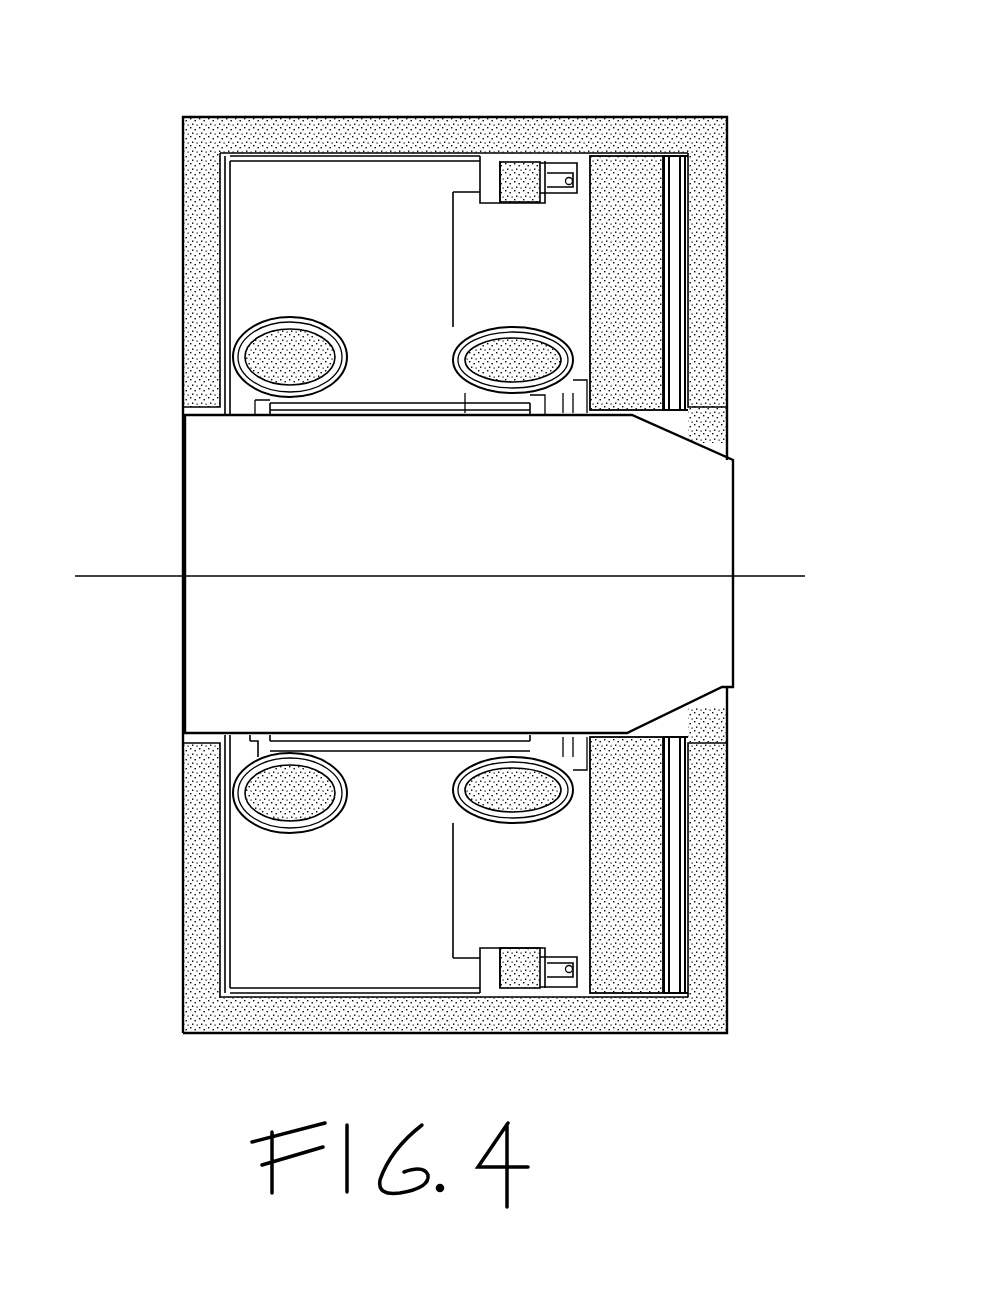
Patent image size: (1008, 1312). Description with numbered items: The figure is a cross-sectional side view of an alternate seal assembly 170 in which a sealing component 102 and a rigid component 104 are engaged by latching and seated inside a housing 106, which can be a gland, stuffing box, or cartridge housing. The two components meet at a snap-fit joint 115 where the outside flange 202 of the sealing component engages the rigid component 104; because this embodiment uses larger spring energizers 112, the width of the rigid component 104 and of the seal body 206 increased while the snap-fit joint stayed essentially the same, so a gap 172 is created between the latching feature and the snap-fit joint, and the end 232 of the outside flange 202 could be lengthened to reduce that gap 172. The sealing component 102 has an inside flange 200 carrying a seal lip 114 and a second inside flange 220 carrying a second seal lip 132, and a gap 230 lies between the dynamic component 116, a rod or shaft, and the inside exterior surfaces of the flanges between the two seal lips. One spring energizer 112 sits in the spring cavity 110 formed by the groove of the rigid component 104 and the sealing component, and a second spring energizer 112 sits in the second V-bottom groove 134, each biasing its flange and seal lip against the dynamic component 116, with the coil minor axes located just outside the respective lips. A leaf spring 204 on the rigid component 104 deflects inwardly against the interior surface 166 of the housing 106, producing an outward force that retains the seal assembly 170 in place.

The seal assembly 170 is at (158, 357).
The housing 106 is at (218, 143).
The sealing component 102 is at (268, 215).
The snap-fit joint 115 is at (483, 187).
The gap 172 is at (515, 177).
The leaf spring 204 is at (562, 167).
The rigid component 104 is at (547, 290).
The spring energizer 112 is at (255, 333).
The gap 230 is at (387, 410).
The second seal lip 132 is at (262, 420).
The seal lip 114 is at (530, 410).
The inside flange 200 is at (482, 400).
The dynamic component 116 is at (707, 490).
The seal body 206 is at (293, 898).
The second inside flange 220 is at (317, 752).
The second V-bottom groove 134 is at (283, 787).
The spring cavity 110 is at (525, 793).
The interior surface 166 is at (625, 987).
The outside flange 202 is at (478, 970).
The end 232 is at (527, 972).